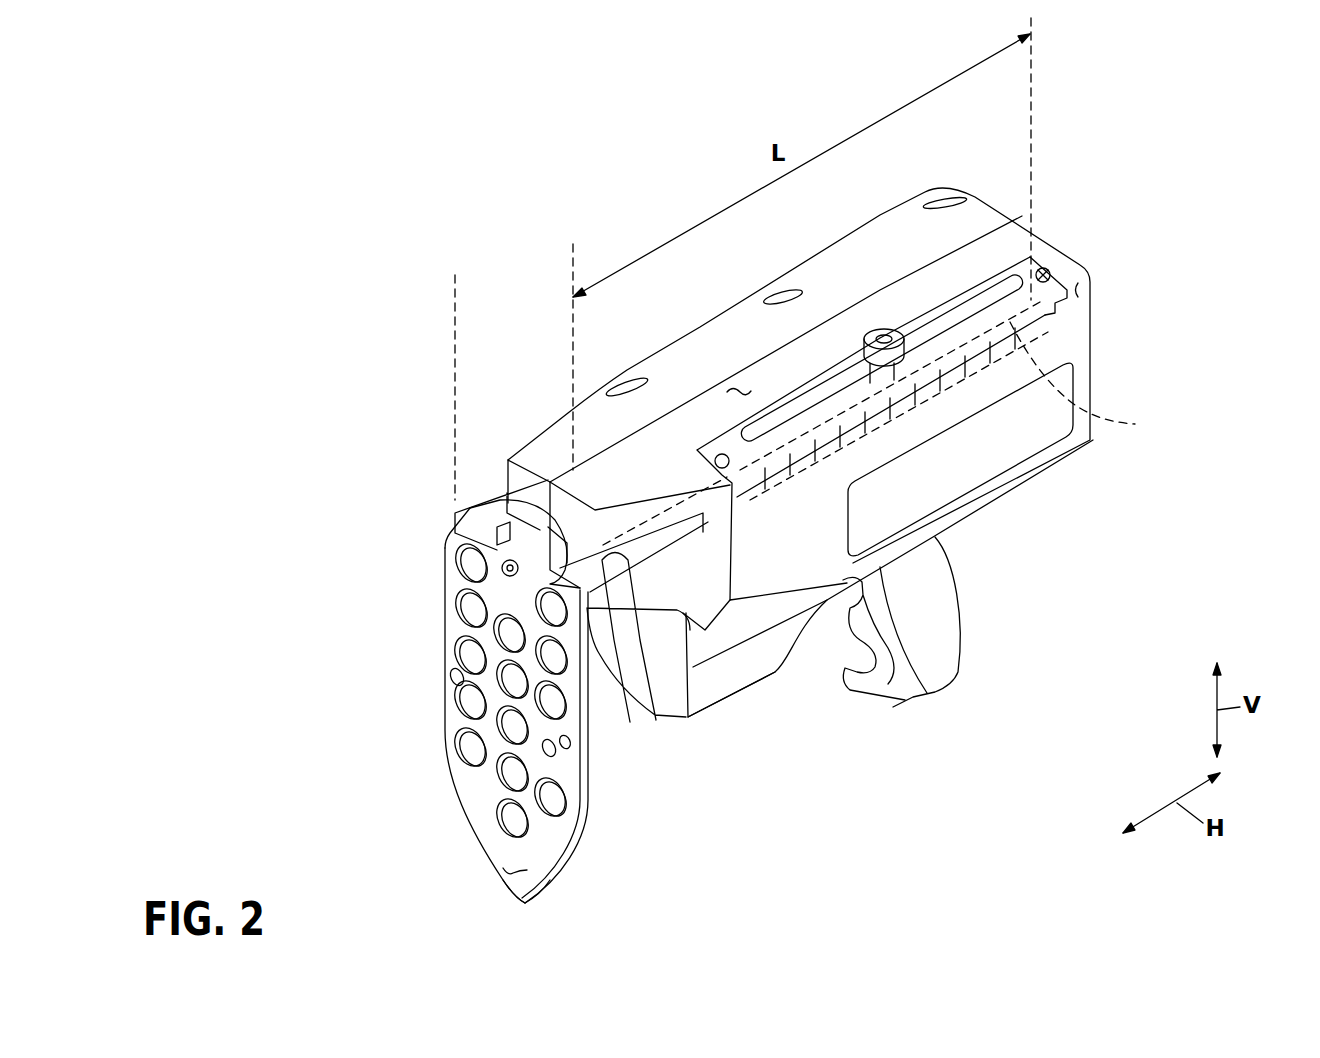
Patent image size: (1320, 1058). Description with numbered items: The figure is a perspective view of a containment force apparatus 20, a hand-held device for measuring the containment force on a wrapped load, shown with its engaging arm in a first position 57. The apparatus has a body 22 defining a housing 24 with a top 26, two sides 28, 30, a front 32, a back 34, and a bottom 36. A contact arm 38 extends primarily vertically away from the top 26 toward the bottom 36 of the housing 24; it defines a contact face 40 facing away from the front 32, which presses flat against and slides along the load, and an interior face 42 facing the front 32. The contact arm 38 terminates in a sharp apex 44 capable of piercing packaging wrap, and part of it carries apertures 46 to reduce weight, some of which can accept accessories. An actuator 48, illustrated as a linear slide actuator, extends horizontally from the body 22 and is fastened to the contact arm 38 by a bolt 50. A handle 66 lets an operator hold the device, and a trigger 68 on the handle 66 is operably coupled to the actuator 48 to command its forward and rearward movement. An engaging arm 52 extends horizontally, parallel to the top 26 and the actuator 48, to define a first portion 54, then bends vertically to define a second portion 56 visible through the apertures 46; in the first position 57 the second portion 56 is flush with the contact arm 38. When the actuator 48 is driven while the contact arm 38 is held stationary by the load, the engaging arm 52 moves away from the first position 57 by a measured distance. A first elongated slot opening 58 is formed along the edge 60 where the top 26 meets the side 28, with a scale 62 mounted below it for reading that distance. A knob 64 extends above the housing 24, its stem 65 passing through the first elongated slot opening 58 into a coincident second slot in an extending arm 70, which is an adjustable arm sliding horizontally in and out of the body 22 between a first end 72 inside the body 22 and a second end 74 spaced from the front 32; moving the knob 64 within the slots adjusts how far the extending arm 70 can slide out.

The containment force apparatus 20 is at (470, 186).
The body 22 is at (1093, 330).
The housing 24 is at (862, 280).
The top 26 is at (740, 387).
The side 28 is at (810, 560).
The side 30 is at (665, 333).
The front 32 is at (528, 500).
The back 34 is at (1110, 386).
The bottom 36 is at (744, 706).
The contact arm 38 is at (545, 724).
The contact face 40 is at (513, 880).
The interior face 42 is at (588, 807).
The apex 44 is at (512, 902).
The apertures 46 is at (463, 760).
The actuator 48 is at (507, 518).
The bolt 50 is at (497, 568).
The engaging arm 52 is at (471, 484).
The first portion 54 is at (492, 507).
The second portion 56 is at (518, 777).
The first position 57 is at (450, 330).
The first elongated slot opening 58 is at (965, 322).
The edge 60 is at (1093, 296).
The scale 62 is at (925, 383).
The knob 64 is at (895, 330).
The stem 65 is at (857, 367).
The handle 66 is at (940, 620).
The trigger 68 is at (913, 695).
The extending arm 70 is at (638, 654).
The first end 72 is at (1046, 267).
The second end 74 is at (565, 597).